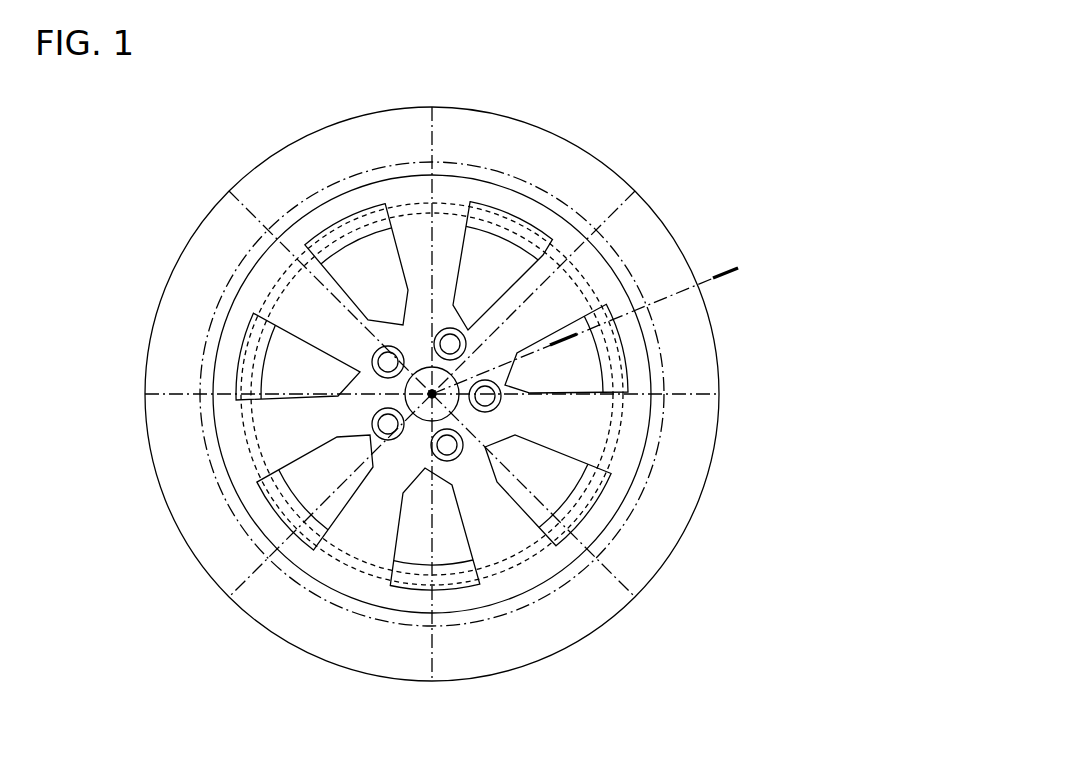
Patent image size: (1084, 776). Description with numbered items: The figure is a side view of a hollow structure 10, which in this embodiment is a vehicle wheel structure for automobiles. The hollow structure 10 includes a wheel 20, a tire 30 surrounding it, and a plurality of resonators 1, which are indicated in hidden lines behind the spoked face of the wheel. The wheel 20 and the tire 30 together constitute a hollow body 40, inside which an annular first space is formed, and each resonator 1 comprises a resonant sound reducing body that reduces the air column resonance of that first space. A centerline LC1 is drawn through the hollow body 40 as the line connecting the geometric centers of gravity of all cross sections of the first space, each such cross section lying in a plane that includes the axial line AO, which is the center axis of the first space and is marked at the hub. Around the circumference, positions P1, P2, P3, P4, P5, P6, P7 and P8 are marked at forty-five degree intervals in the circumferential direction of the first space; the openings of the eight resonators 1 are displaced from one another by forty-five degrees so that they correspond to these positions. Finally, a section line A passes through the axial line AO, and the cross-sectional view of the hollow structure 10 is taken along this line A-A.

The resonator 1 is at (560, 263).
The hollow structure 10 is at (753, 121).
The wheel 20 is at (517, 203).
The tire 30 is at (568, 155).
The hollow body 40 is at (618, 85).
The line A- A is at (566, 339).
The axial line AO is at (432, 394).
The centerline LC1 is at (648, 490).
The position P1 is at (432, 107).
The position P2 is at (635, 191).
The position P3 is at (719, 394).
The position P4 is at (635, 597).
The position P5 is at (432, 681).
The position P6 is at (229, 597).
The position P7 is at (145, 394).
The position P8 is at (229, 191).